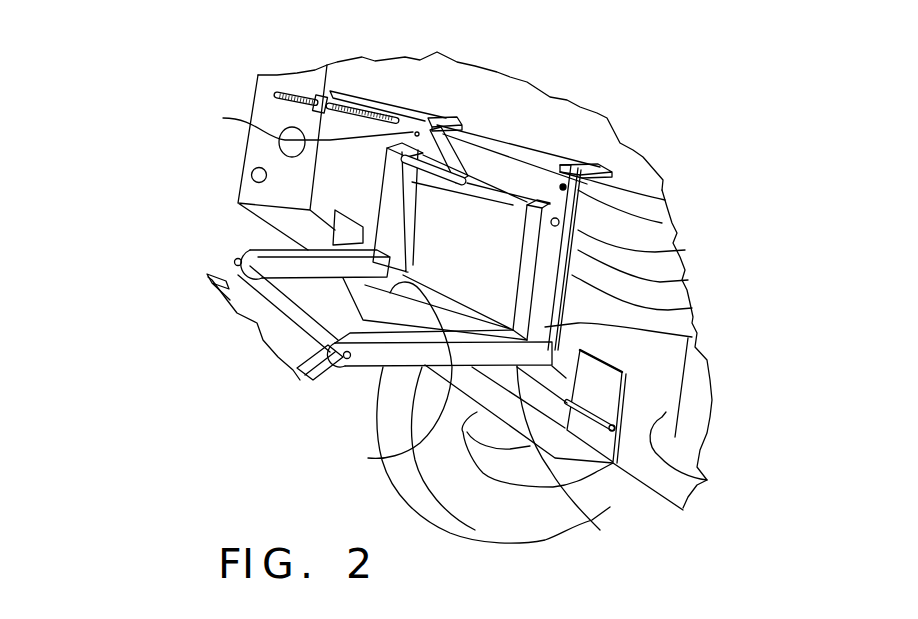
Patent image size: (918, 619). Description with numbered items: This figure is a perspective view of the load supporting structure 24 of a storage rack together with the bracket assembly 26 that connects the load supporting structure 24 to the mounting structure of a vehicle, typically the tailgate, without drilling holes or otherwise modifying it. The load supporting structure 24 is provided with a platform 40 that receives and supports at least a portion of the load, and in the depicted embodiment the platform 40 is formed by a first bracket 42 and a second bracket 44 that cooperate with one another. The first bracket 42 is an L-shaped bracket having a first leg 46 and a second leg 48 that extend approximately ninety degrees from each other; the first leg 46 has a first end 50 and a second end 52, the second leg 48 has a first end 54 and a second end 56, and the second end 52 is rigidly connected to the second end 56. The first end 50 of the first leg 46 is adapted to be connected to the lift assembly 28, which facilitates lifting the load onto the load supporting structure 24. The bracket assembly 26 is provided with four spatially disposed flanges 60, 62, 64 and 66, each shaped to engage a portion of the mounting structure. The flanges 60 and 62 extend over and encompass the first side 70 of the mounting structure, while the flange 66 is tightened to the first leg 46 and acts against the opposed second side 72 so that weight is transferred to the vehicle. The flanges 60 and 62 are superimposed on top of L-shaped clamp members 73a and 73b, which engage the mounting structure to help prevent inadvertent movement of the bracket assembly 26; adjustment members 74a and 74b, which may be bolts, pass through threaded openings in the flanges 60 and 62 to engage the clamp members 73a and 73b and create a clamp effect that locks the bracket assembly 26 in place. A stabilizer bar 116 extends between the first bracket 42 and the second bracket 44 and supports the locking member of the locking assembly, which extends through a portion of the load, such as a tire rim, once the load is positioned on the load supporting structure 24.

The load supporting structure 24 is at (361, 384).
The bracket assembly 26 is at (613, 148).
The lift assembly 28 is at (201, 270).
The platform 40 is at (258, 250).
The first bracket 42 is at (692, 308).
The second bracket 44 is at (310, 205).
The first leg 46 is at (400, 455).
The second leg 48 is at (688, 280).
The first end 50 is at (310, 386).
The second end 52 is at (417, 483).
The first end 54 is at (685, 250).
The second end 56 is at (692, 337).
The flange 60 is at (440, 115).
The flange 62 is at (585, 163).
The flange 64 is at (588, 518).
The flange 66 is at (390, 283).
The first side 70 is at (489, 132).
The second side 72 is at (707, 481).
The clamp member 73a is at (463, 117).
The clamp member 73b is at (620, 170).
The adjustment member 74a is at (292, 123).
The adjustment member 74b is at (668, 222).
The stabilizer bar 116 is at (507, 203).